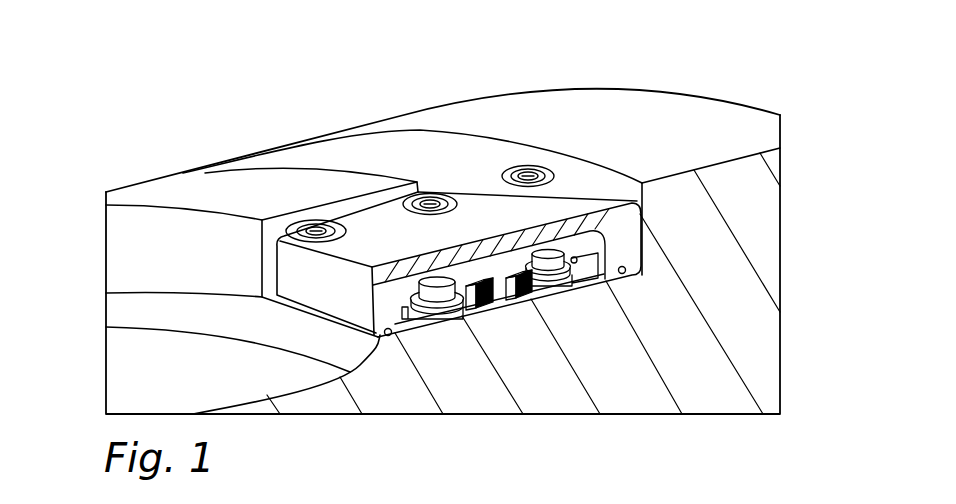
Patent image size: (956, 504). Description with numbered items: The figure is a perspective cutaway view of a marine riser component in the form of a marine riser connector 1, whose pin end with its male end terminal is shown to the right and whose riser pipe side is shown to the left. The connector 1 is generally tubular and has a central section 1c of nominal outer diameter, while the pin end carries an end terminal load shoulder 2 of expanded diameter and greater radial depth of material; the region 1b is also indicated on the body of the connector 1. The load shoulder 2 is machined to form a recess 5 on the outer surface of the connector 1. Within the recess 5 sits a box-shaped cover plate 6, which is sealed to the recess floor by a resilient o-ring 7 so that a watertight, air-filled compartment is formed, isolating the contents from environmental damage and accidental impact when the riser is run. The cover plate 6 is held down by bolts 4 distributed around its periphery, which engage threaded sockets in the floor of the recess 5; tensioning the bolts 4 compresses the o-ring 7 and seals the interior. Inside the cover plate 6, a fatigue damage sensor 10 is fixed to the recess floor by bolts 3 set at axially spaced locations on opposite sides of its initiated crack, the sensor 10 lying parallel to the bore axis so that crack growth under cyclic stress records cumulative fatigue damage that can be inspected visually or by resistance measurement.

The marine riser connector 1 is at (292, 100).
The inner liner of tire 1b is at (568, 100).
The central section 1c is at (130, 358).
The end terminal load shoulder 2 is at (186, 190).
The bolts 3 is at (447, 321).
The bolts 4 is at (428, 198).
The recess 5 is at (266, 261).
The cover plate 6 is at (627, 234).
The o-ring 7 is at (388, 337).
The fatigue damage sensor 10 is at (513, 307).